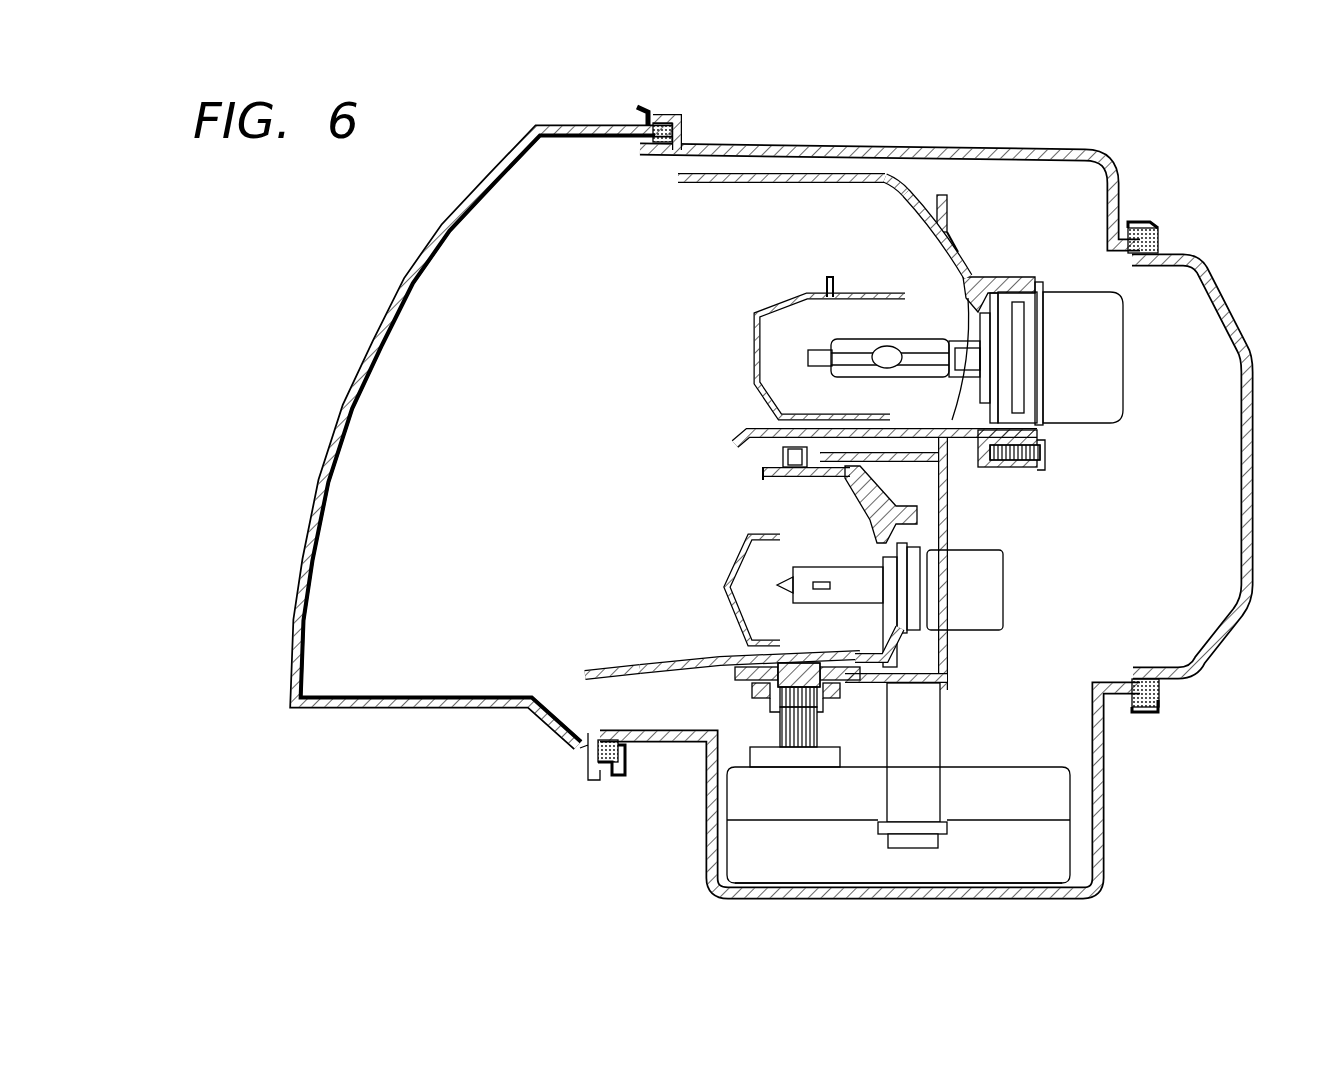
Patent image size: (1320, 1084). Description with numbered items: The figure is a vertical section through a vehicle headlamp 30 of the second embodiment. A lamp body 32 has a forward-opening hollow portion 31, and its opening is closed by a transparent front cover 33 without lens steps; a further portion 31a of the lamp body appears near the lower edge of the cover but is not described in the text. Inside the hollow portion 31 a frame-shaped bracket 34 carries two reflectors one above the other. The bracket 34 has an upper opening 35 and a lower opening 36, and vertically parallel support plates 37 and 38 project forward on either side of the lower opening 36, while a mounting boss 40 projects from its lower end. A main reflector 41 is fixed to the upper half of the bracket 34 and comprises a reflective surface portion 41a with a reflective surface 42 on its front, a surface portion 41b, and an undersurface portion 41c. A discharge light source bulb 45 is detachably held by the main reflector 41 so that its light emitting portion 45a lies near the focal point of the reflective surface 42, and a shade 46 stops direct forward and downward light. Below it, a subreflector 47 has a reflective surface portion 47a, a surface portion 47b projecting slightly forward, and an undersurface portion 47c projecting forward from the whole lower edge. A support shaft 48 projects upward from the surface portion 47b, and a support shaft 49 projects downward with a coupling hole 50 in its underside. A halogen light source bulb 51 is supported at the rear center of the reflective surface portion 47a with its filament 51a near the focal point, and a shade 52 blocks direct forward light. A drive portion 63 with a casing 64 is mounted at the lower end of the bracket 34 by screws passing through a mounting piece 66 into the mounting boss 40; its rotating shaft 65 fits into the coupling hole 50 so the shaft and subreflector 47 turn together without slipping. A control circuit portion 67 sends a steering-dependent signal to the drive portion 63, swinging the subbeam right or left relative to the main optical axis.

The vehicle headlamp 30 is at (372, 226).
The hollow portion 31 is at (1040, 152).
The seal groove / seal member 31a is at (585, 742).
The lamp body 32 is at (1122, 200).
The front cover 33 is at (343, 400).
The bracket 34 is at (942, 196).
The upper opening 35 is at (952, 228).
The lower opening 36 is at (952, 650).
The support plate 37 is at (1000, 462).
The support plate 38 is at (900, 684).
The mounting boss 40 is at (930, 787).
The main reflector 41 is at (810, 174).
The reflective surface portion 41a is at (900, 187).
The surface portion 41b is at (733, 173).
The undersurface portion 41c is at (745, 433).
The reflective surface 42 is at (912, 202).
The light source bulb 45 is at (920, 343).
The light emitting portion 45a is at (887, 350).
The shade 46 is at (760, 330).
The subreflector 47 is at (590, 670).
The reflective surface portion 47a is at (893, 470).
The surface portion 47b is at (770, 475).
The undersurface portion 47c is at (650, 665).
The support shaft 48 is at (783, 455).
The support shaft 49 is at (745, 680).
The coupling hole 50 is at (778, 730).
The light source bulb 51 is at (848, 570).
The light emitting portion 51a is at (821, 580).
The shade 52 is at (735, 565).
The drive portion 63 is at (1000, 870).
The casing 64 is at (830, 875).
The rotating shaft 65 is at (817, 720).
The mounting piece 66 is at (948, 828).
The control circuit portion 67 is at (915, 848).